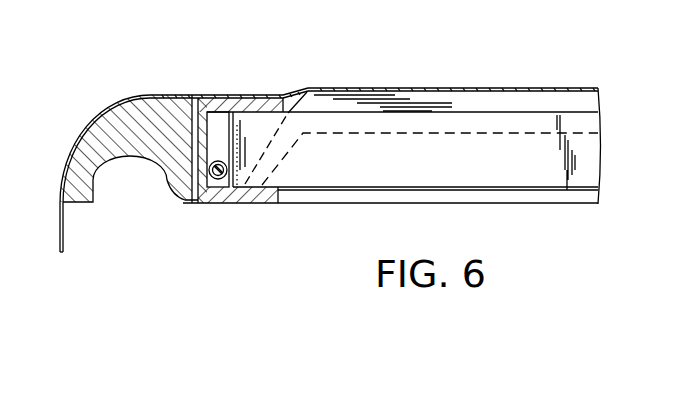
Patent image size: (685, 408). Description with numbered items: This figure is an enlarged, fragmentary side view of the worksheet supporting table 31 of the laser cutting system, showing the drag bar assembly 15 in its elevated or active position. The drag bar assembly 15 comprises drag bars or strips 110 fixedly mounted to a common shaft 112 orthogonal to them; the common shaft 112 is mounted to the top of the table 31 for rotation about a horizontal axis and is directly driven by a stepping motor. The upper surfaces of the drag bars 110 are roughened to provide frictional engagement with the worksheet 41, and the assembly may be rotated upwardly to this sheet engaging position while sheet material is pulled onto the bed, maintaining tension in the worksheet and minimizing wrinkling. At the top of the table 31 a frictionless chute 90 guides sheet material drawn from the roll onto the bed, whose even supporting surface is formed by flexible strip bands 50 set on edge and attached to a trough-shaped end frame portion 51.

The drag bar assembly 15 is at (292, 157).
The table 31 is at (299, 205).
The worksheet 41 is at (300, 92).
The flexible strip band 50 is at (448, 178).
The end frame portion 51 is at (178, 195).
The frictionless chute 90 is at (95, 167).
The drag bar 110 is at (482, 92).
The common shaft 112 is at (223, 177).